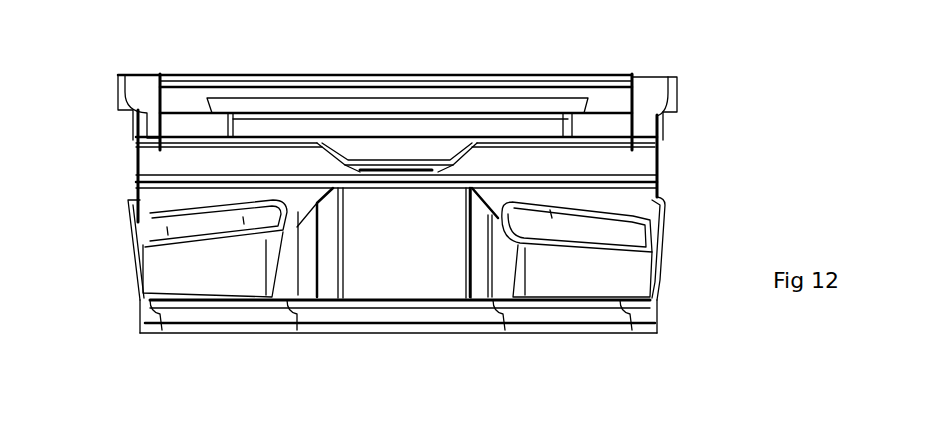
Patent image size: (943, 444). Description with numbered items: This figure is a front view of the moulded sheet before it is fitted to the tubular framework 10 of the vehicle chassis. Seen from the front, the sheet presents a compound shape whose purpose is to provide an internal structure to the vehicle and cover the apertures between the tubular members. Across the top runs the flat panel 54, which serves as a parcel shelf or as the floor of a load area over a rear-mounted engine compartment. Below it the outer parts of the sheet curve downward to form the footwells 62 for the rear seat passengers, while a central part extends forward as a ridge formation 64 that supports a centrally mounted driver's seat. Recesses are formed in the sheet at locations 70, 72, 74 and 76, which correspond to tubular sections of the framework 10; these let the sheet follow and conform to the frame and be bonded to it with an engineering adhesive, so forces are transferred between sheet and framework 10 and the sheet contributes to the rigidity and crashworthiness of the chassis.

The framework 10 is at (690, 68).
The flat panel 54 is at (483, 72).
The footwells 62 is at (198, 203).
The ridge formation 64 is at (405, 250).
The recess location 70 is at (658, 282).
The recess location 72 is at (515, 277).
The recess location 74 is at (147, 313).
The recess location 76 is at (597, 237).